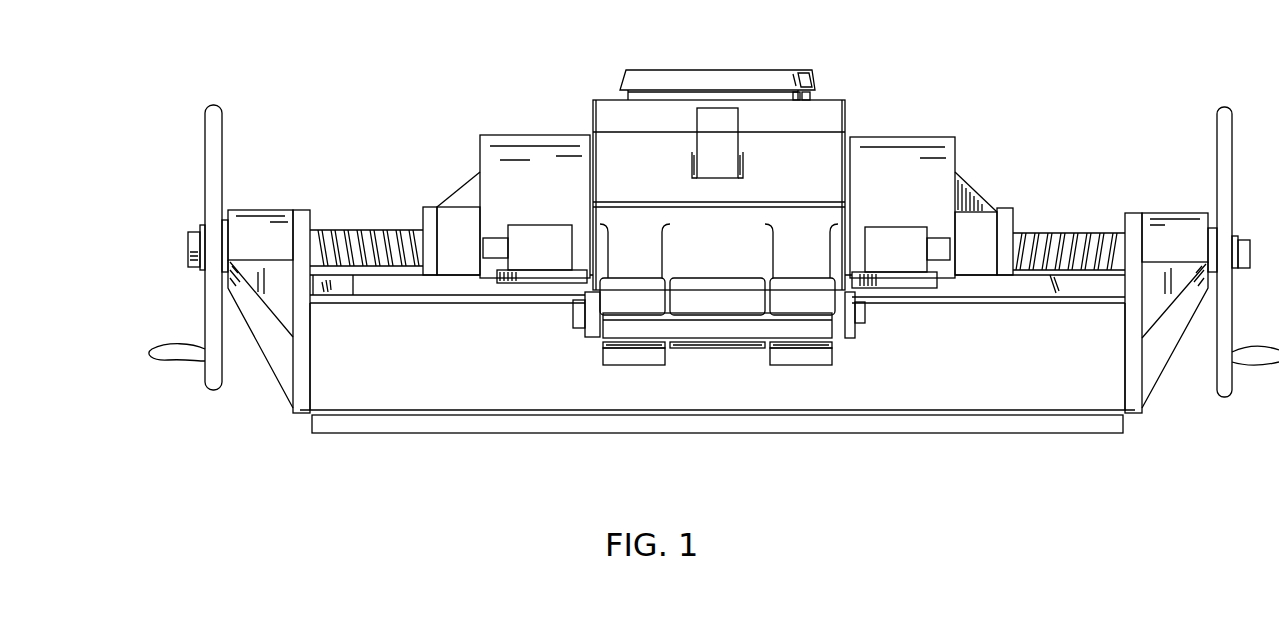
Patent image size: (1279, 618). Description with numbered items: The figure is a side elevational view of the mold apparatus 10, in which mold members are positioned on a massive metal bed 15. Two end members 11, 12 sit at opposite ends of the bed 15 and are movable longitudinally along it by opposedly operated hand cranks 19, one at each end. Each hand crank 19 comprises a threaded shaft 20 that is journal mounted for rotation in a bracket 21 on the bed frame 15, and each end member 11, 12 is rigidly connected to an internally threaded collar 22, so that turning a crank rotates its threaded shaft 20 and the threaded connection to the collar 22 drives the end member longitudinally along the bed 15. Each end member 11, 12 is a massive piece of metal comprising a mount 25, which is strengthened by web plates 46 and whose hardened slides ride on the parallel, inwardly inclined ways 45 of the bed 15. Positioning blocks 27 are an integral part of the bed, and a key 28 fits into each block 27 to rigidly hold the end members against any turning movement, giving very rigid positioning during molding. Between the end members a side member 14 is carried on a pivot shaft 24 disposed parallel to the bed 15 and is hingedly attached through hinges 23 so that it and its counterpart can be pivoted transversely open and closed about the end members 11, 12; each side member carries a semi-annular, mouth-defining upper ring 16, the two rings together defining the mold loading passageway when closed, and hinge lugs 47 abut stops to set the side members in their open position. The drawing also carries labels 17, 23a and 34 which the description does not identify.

The apparatus 10 is at (586, 433).
The end member 11 is at (510, 135).
The end member 12 is at (915, 137).
The side member 14 is at (845, 106).
The bed 15 is at (402, 390).
The upper ring 16 is at (800, 70).
The fastener 17 is at (810, 96).
The hand crank 19 is at (235, 142).
The threaded shaft 20 is at (398, 230).
The bracket 21 is at (262, 210).
The internally threaded collar 22 is at (471, 256).
The hinge 23 is at (773, 258).
The roller strip 23a is at (715, 350).
The pivot shaft 24 is at (866, 318).
The mount 25 is at (549, 184).
The positioning block 27 is at (553, 256).
The key 28 is at (495, 250).
The guide block 34 is at (731, 146).
The ways 45 is at (388, 296).
The web plates 46 is at (437, 205).
The hinge lugs 47 is at (678, 328).